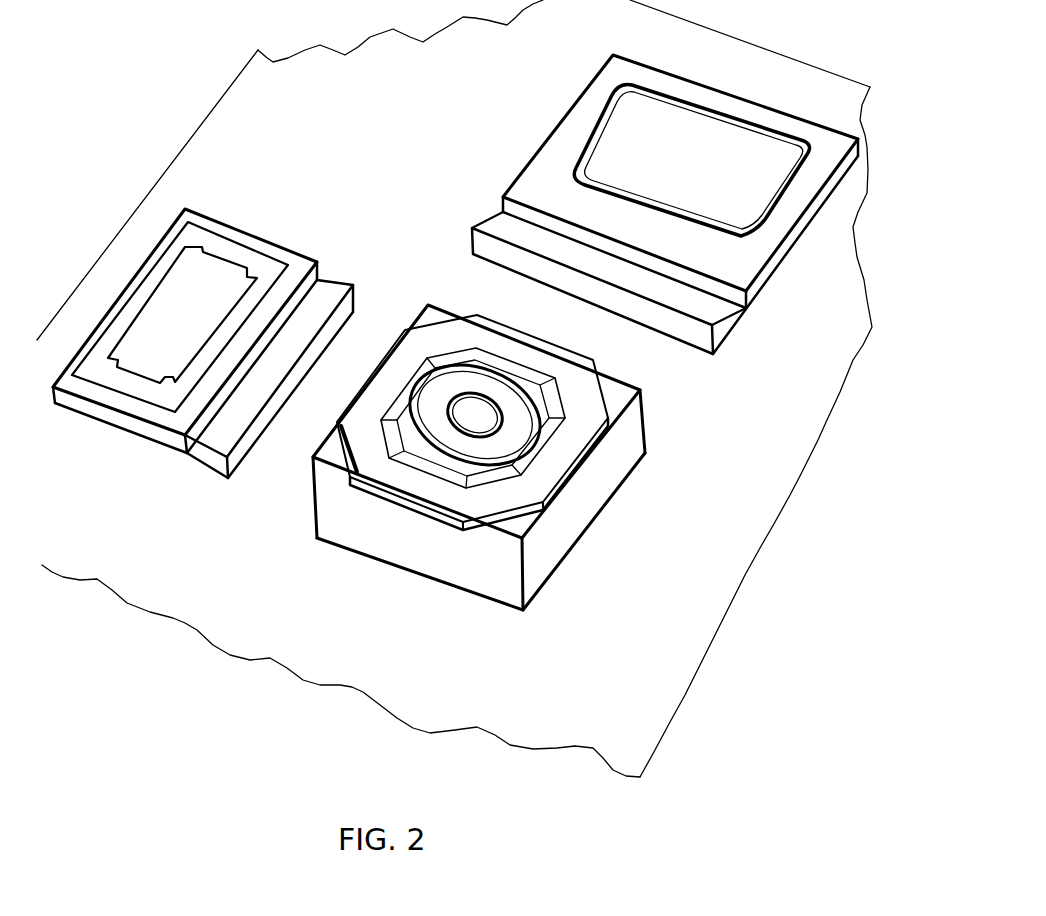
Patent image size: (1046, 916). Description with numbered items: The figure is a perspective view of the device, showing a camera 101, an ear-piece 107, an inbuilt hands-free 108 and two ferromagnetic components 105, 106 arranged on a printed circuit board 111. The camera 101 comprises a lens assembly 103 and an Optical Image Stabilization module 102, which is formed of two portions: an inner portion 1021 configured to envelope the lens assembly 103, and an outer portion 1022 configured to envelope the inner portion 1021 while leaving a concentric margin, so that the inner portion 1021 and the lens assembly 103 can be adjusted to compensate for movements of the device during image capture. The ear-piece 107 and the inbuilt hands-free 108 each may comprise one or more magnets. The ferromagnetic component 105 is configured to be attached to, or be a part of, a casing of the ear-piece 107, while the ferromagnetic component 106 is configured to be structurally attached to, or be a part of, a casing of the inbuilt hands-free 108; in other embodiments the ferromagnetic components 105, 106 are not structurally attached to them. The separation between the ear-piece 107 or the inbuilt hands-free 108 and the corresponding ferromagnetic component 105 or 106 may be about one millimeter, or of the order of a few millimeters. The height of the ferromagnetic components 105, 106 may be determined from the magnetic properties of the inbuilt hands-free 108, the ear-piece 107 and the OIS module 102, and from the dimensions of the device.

The camera 101 is at (522, 457).
The Optical Image Stabilization (OIS) module 102 is at (479, 457).
The inner portion 1021 is at (405, 421).
The outer portion 1022 is at (431, 501).
The lens assembly 103 is at (467, 410).
The ferromagnetic component 105 is at (237, 457).
The ferromagnetic component 106 is at (707, 345).
The ear-piece 107 is at (103, 418).
The inbuilt hands-free 108 is at (717, 88).
The printed circuit board (PCB) 111 is at (406, 141).